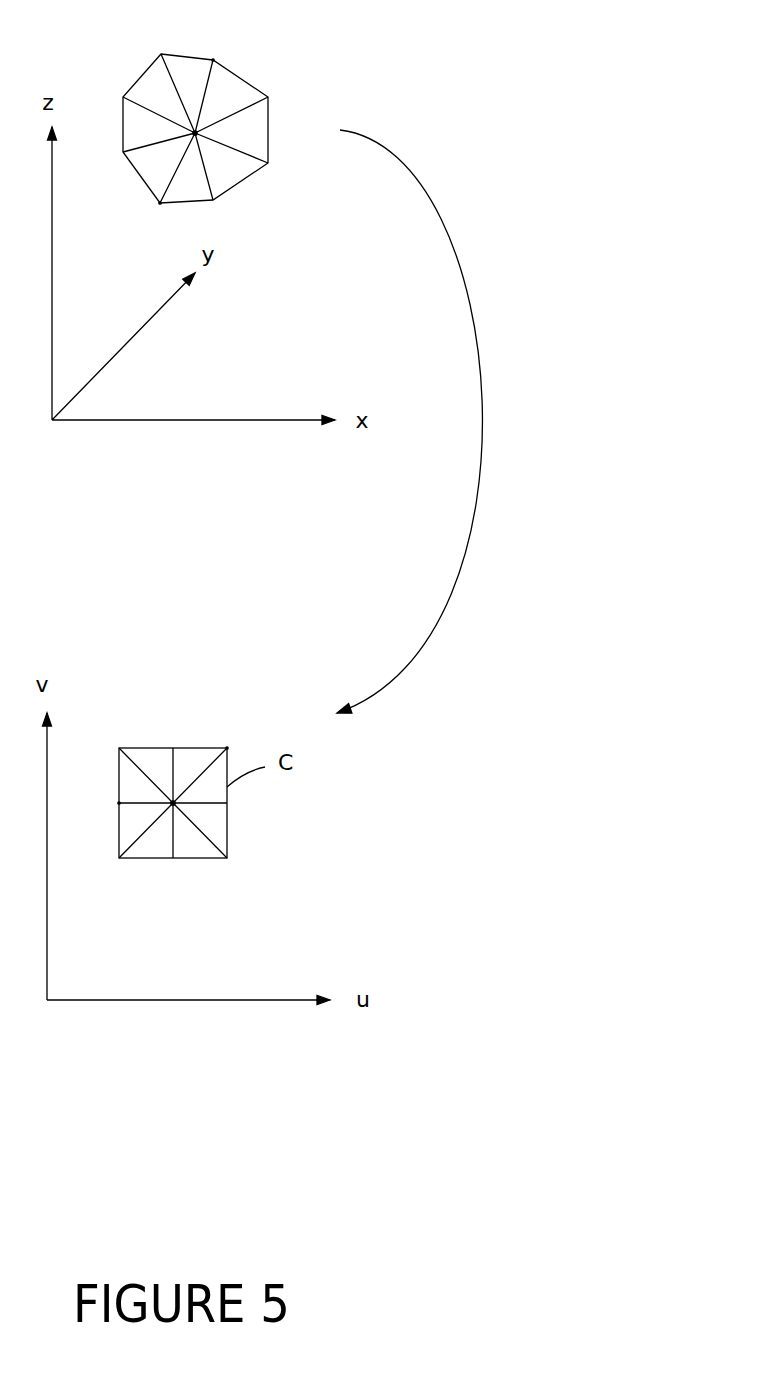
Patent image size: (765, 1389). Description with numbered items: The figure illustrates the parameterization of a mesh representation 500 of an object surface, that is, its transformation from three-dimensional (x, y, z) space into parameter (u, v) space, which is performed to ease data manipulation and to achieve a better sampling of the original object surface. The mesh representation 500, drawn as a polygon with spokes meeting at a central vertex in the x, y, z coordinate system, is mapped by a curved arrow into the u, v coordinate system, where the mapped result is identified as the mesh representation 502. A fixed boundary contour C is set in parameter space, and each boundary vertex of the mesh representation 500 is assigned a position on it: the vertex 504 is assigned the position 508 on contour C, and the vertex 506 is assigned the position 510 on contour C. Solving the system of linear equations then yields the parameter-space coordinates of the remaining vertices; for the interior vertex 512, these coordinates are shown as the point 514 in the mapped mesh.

The mesh representation 500 is at (160, 42).
The mesh representation mapped into parameter space 502 is at (163, 727).
The vertex 504 is at (222, 53).
The vertex 506 is at (148, 212).
The position on contour C 508 is at (227, 748).
The position on contour C 510 is at (119, 803).
The vertex 512 is at (196, 132).
The coordinates of vertex in parameter space 514 is at (174, 804).